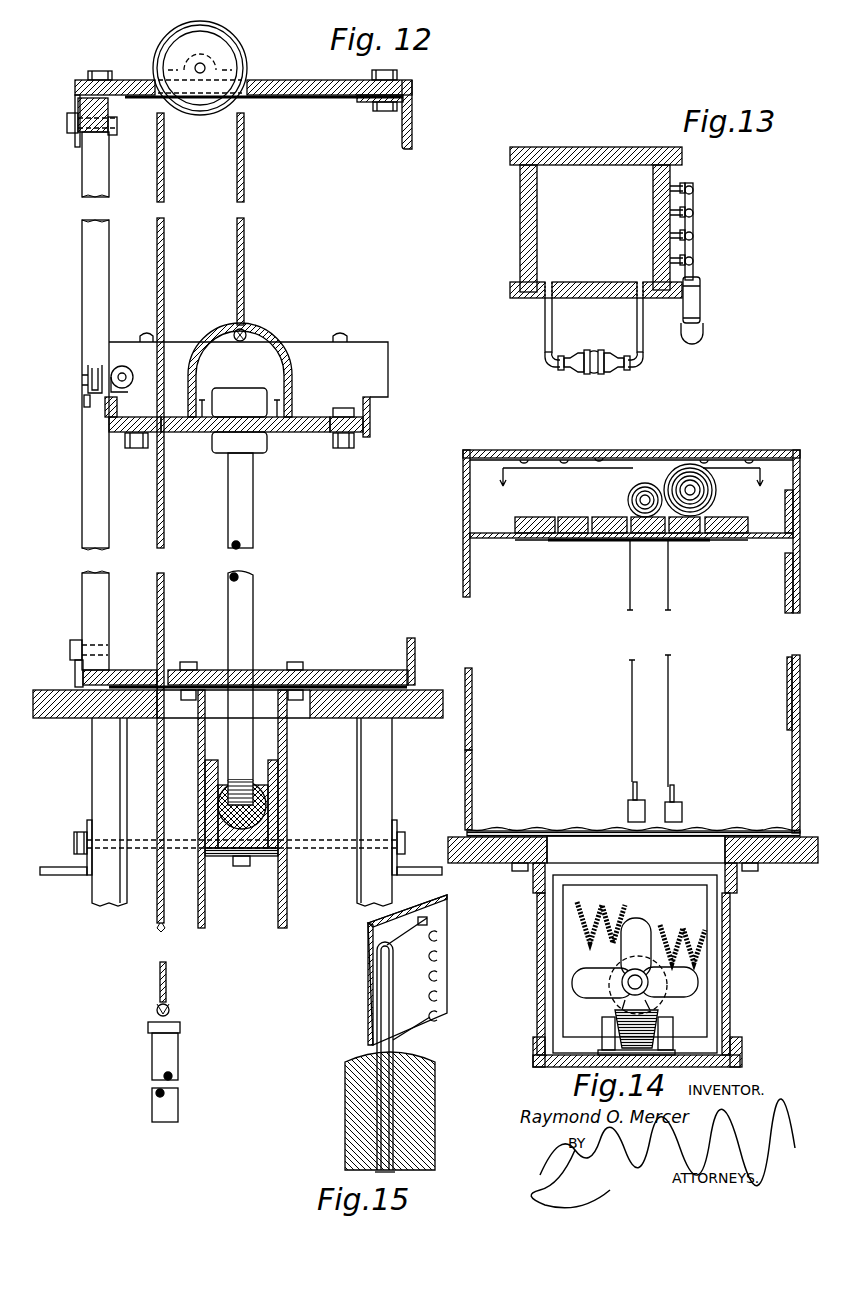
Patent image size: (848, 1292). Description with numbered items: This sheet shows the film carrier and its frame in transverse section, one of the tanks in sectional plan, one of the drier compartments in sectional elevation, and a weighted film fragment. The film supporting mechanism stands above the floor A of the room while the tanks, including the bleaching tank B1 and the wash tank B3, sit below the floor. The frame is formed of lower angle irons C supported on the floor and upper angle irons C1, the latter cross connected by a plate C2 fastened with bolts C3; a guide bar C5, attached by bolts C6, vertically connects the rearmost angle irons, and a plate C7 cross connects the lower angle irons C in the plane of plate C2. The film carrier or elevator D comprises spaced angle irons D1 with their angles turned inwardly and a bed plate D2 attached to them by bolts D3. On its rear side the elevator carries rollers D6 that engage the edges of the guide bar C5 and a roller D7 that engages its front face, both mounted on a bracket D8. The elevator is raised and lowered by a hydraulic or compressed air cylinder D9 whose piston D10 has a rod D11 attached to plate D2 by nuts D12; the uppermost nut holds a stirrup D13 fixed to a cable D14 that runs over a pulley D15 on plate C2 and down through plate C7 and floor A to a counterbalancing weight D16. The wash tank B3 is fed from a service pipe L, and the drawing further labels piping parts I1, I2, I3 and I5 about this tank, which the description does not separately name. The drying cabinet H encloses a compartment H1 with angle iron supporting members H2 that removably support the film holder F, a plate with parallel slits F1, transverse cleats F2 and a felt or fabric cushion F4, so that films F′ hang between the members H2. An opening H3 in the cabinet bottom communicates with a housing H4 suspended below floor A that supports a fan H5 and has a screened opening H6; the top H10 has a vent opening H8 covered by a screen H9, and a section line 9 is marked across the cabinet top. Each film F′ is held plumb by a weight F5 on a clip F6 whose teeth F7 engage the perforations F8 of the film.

In FIG. 12, the floor A is at (70, 710).
In FIG. 14, the floor A is at (508, 853).
In FIG. 12, the tank B1 is at (141, 788).
In FIG. 13, the wash tank B3 is at (601, 163).
In FIG. 12, the angle irons C is at (77, 663).
In FIG. 12, the angle irons C1 is at (75, 138).
In FIG. 12, the plate C2 is at (289, 90).
In FIG. 12, the bolts C3 is at (93, 72).
In FIG. 12, the guide bar C5 is at (83, 463).
In FIG. 12, the bolts C6 is at (68, 115).
In FIG. 12, the plate C7 is at (322, 676).
In FIG. 12, the film carrier or elevator D is at (314, 410).
In FIG. 12, the angle irons D1 is at (107, 420).
In FIG. 12, the bed or plate D2 is at (313, 432).
In FIG. 12, the bolts D3 is at (137, 450).
In FIG. 12, the rollers D6 is at (89, 372).
In FIG. 12, the roller D7 is at (124, 365).
In FIG. 12, the bracket D8 is at (103, 400).
In FIG. 12, the hydraulic or compressed air cylinder D9 is at (272, 880).
In FIG. 12, the piston D10 is at (277, 815).
In FIG. 12, the rod D11 is at (255, 495).
In FIG. 12, the nuts D12 is at (223, 440).
In FIG. 12, the stirrup D13 is at (261, 330).
In FIG. 12, the cable D14 is at (246, 243).
In FIG. 12, the pulley D15 is at (224, 57).
In FIG. 12, the weight D16 is at (165, 1058).
In FIG. 13, the vertical pipe I1 is at (696, 225).
In FIG. 13, the nozzle I2 is at (668, 236).
In FIG. 13, the drain pipe I3 is at (637, 314).
In FIG. 13, the valve pipe I5 is at (594, 372).
In FIG. 13, the service pipe L is at (701, 305).
In FIG. 14, the drying cabinet H is at (473, 688).
In FIG. 14, the compartment H1 is at (473, 733).
In FIG. 14, the angle iron supporting members H2 is at (512, 539).
In FIG. 14, the opening H3 is at (692, 847).
In FIG. 14, the housing H4 is at (736, 906).
In FIG. 14, the fan H5 is at (595, 982).
In FIG. 14, the screened opening H6 is at (664, 901).
In FIG. 14, the vent opening H8 is at (683, 456).
In FIG. 14, the screen H9 is at (600, 462).
In FIG. 14, the top H10 is at (759, 452).
In FIG. 14, the plate F is at (536, 527).
In FIG. 14, the slits F1 is at (571, 534).
In FIG. 14, the cleats F2 is at (708, 500).
In FIG. 14, the felt or fabric F4 is at (598, 513).
In FIG. 14, the weights F5 is at (628, 810).
In FIG. 15, the weights F5 is at (418, 1092).
In FIG. 14, the films F′ is at (666, 563).
In FIG. 15, the films F′ is at (385, 925).
In FIG. 15, the clips F6 is at (403, 1013).
In FIG. 15, the teeth F7 is at (452, 932).
In FIG. 15, the perforations F8 is at (441, 997).
In FIG. 14, the section line 9 is at (632, 489).